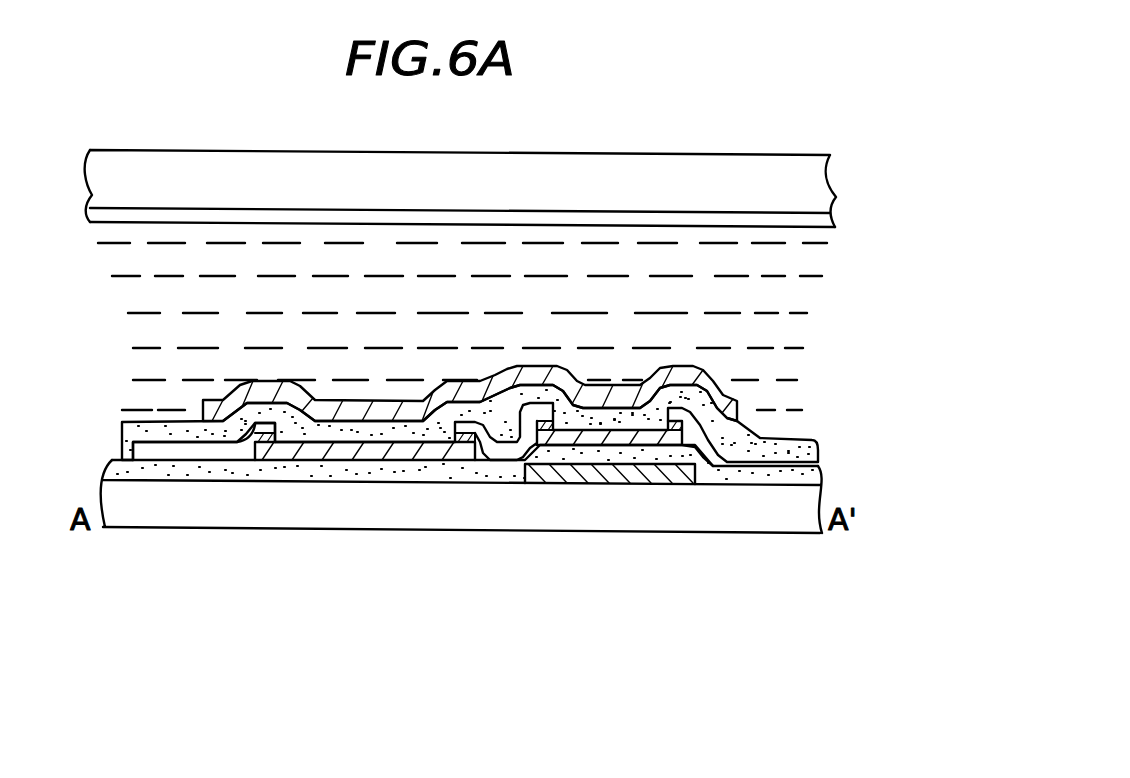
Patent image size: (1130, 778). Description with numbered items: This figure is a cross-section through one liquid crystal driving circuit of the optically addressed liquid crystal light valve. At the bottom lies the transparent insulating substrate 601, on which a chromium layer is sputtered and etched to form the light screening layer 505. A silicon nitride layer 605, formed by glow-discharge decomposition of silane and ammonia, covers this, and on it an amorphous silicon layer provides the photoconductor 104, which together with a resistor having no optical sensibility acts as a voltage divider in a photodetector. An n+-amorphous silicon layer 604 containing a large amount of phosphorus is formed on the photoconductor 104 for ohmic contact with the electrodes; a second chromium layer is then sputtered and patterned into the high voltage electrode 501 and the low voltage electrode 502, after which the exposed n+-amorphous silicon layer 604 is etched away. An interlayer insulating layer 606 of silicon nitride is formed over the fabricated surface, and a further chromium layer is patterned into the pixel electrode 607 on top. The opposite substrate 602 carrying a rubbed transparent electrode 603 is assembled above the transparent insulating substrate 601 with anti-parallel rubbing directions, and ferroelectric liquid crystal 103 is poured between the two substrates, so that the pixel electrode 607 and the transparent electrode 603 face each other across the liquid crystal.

The opposite substrate 602 is at (763, 170).
The transparent electrode 603 is at (821, 218).
The ferroelectric liquid crystal 103 is at (809, 278).
The pixel electrode 607 is at (740, 401).
The interlayer insulating layer 606 is at (807, 450).
The gate insulating layer 605 is at (818, 473).
The transparent insulating substrate 601 is at (775, 515).
The high voltage electrode 501 is at (173, 450).
The photoconductor 104 is at (343, 450).
The n+-amorphous silicon layer 604 is at (462, 440).
The light screening layer 505 is at (628, 477).
The low voltage electrode 502 is at (722, 452).